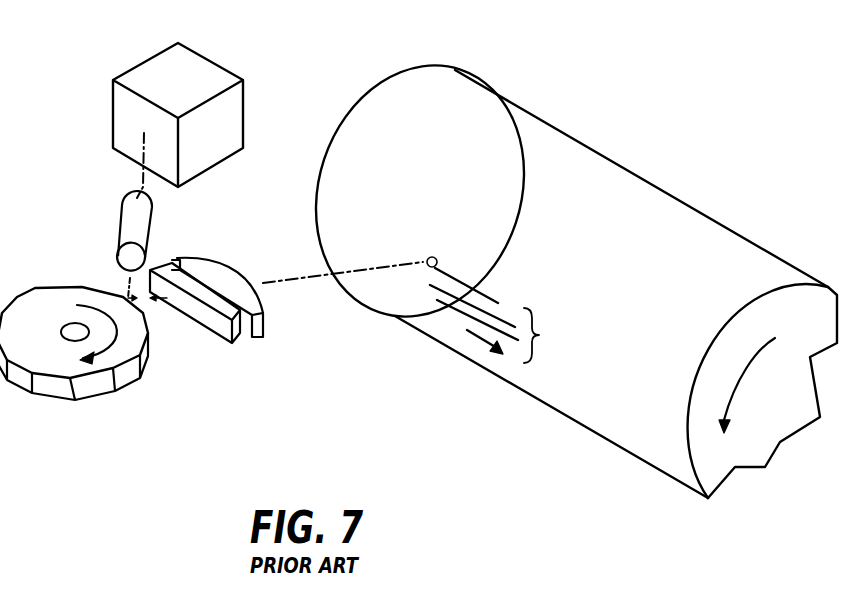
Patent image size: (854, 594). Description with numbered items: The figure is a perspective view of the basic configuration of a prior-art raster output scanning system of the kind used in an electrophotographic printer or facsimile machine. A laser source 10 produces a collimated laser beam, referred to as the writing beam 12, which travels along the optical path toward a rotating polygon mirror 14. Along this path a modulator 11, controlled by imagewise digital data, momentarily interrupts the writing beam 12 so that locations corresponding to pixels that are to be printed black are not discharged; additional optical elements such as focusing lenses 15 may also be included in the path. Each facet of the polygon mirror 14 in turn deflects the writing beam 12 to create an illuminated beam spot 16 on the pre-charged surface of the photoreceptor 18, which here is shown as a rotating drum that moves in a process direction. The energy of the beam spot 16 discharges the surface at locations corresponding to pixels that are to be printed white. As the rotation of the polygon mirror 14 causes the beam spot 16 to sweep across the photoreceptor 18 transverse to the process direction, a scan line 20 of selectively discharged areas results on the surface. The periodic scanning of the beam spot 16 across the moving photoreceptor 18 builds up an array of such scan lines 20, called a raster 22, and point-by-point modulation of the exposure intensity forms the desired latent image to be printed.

The laser source 10 is at (145, 58).
The modulator 11 is at (128, 232).
The writing beam 12 is at (140, 190).
The rotating polygon mirror 14 is at (67, 285).
The focusing lenses 15 is at (203, 266).
The beam spot 16 is at (429, 257).
The photoreceptor 18 is at (481, 121).
The scan line 20 is at (473, 285).
The raster 22 is at (539, 335).